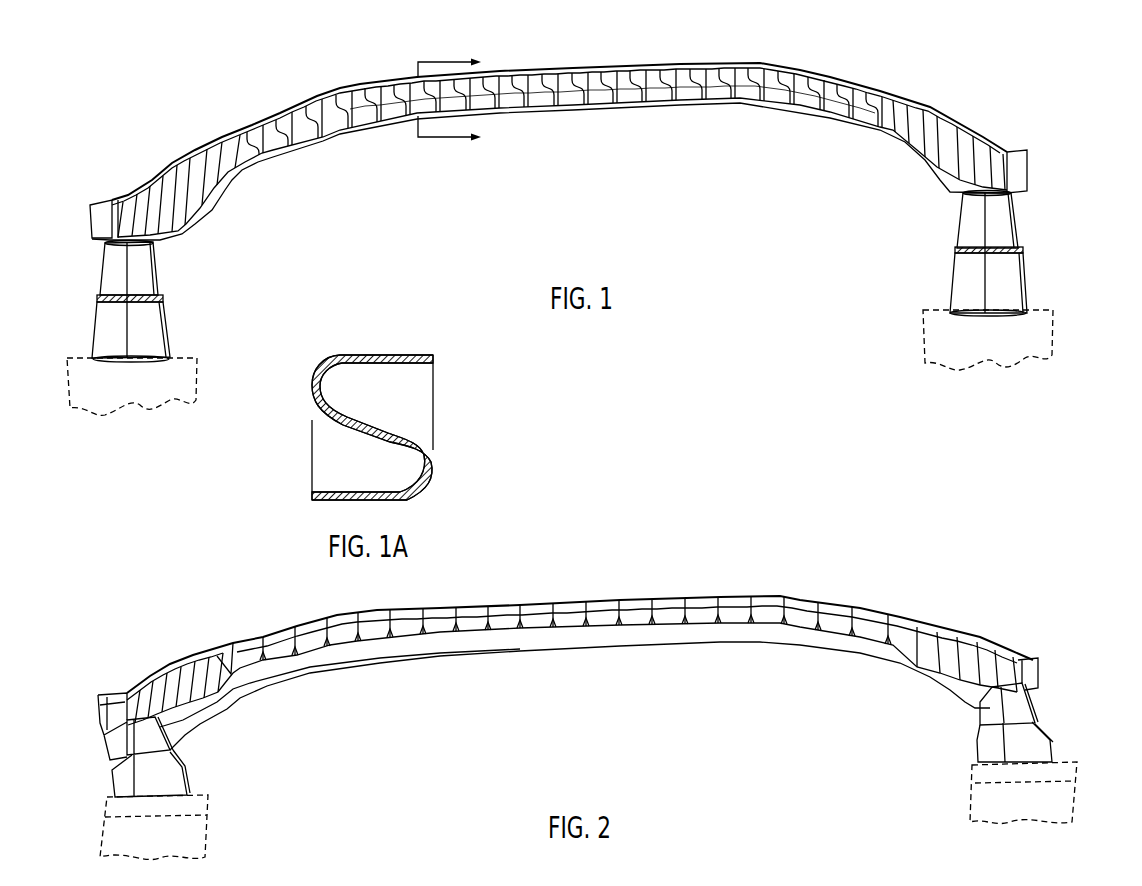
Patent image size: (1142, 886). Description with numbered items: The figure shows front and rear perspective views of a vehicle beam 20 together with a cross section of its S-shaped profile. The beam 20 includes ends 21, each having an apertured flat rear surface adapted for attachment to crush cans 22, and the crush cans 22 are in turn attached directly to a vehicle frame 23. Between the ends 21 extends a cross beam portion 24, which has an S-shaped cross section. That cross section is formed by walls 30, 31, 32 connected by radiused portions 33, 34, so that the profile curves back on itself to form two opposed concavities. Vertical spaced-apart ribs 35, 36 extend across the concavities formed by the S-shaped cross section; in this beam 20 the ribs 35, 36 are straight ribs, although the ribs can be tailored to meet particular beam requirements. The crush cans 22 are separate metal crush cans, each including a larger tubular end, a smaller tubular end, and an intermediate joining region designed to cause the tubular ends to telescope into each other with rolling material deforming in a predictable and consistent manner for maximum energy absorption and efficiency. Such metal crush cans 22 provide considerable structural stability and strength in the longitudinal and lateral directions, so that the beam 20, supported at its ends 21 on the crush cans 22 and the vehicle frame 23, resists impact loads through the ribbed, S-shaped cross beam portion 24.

In FIG. 1, the beam 20 is at (138, 100).
In FIG. 1A, the beam 20 is at (250, 462).
In FIG. 2, the beam 20 is at (185, 618).
In FIG. 1, the ends 21 is at (155, 164).
In FIG. 2, the ends 21 is at (147, 677).
In FIG. 1, the crush cans 22 is at (163, 313).
In FIG. 2, the crush cans 22 is at (187, 777).
In FIG. 1, the vehicle frame 23 is at (180, 353).
In FIG. 2, the vehicle frame 23 is at (203, 793).
In FIG. 1, the cross beam portion 24 is at (575, 112).
In FIG. 1, the wall 30 is at (567, 70).
In FIG. 1A, the wall 30 is at (380, 355).
In FIG. 2, the wall 30 is at (638, 602).
In FIG. 1, the wall 31 is at (362, 112).
In FIG. 1A, the wall 31 is at (387, 427).
In FIG. 1, the wall 32 is at (634, 108).
In FIG. 1A, the wall 32 is at (327, 500).
In FIG. 2, the wall 32 is at (577, 640).
In FIG. 1A, the radiused portion 33 is at (312, 383).
In FIG. 2, the radiused portion 33 is at (553, 610).
In FIG. 1, the radiused portion 34 is at (683, 93).
In FIG. 1A, the radiused portion 34 is at (433, 460).
In FIG. 1, the rib 35 is at (383, 90).
In FIG. 1A, the rib 35 is at (433, 380).
In FIG. 1A, the rib 36 is at (310, 460).
In FIG. 2, the rib 36 is at (687, 625).